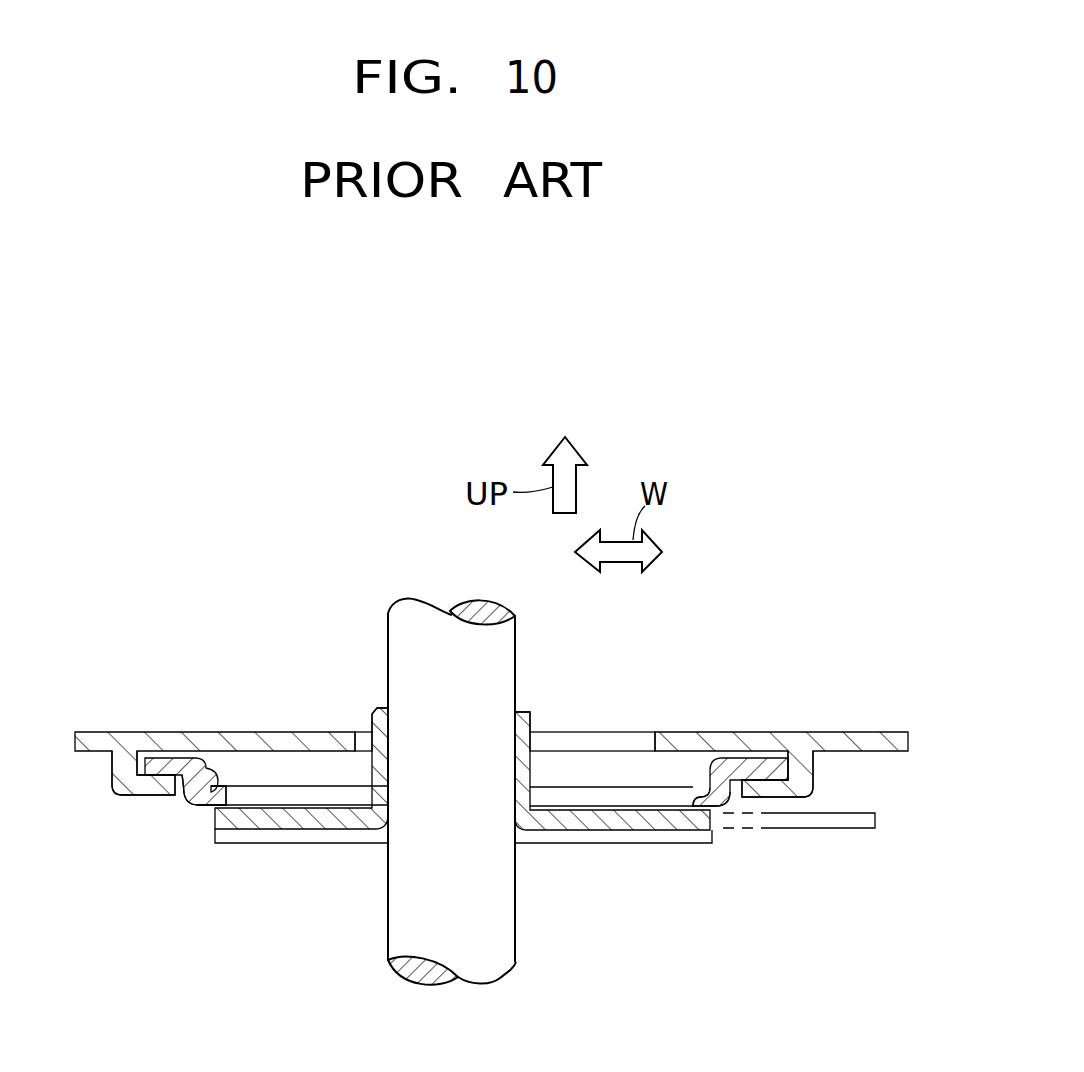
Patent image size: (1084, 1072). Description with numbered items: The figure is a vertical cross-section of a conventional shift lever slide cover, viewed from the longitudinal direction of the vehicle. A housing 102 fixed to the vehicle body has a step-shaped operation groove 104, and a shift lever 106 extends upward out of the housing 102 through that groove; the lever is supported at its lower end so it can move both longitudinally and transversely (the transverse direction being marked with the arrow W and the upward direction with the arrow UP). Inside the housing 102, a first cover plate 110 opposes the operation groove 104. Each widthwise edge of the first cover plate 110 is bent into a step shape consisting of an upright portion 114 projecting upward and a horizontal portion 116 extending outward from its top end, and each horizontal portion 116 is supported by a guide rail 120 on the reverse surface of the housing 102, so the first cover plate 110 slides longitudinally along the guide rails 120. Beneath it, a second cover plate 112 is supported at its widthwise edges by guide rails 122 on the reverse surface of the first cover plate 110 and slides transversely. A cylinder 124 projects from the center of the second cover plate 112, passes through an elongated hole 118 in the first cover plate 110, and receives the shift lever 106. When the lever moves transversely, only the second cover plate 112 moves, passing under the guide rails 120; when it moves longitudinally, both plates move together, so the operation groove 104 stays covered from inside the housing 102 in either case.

The housing 102 is at (778, 732).
The operation groove 104 is at (652, 746).
The shift lever 106 is at (503, 651).
The first cover plate 110 is at (250, 785).
The second cover plate 112 is at (312, 822).
The upright portion 114 is at (197, 808).
The horizontal portion 116 is at (170, 762).
The elongated hole 118 is at (680, 803).
The guide rail 120 is at (135, 800).
The guide rail 122 is at (593, 837).
The cylinder 124 is at (372, 712).